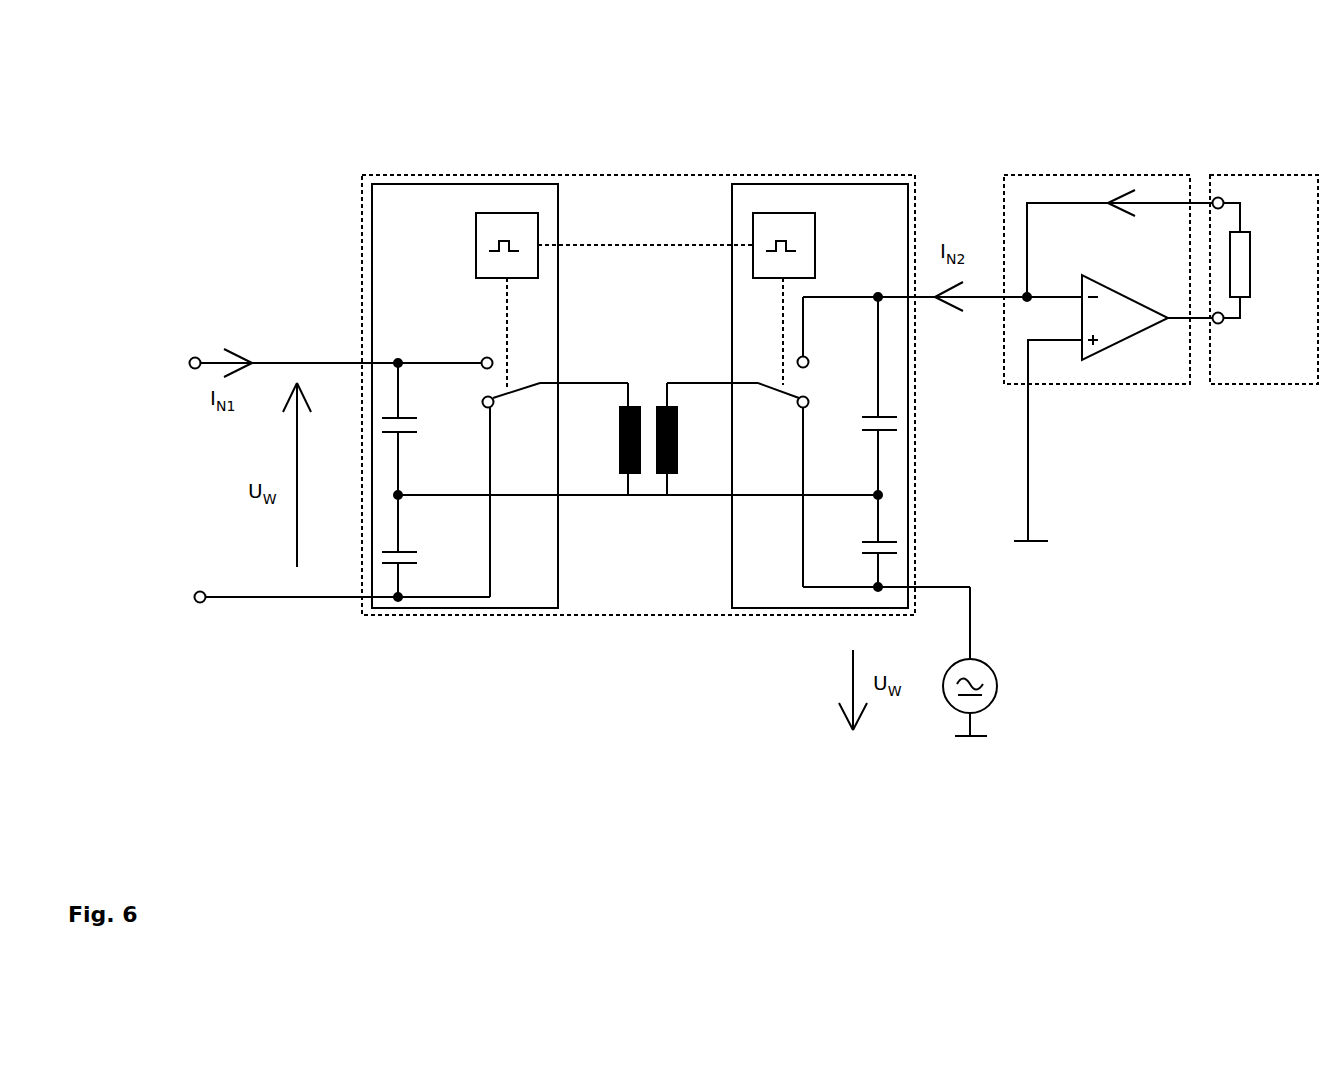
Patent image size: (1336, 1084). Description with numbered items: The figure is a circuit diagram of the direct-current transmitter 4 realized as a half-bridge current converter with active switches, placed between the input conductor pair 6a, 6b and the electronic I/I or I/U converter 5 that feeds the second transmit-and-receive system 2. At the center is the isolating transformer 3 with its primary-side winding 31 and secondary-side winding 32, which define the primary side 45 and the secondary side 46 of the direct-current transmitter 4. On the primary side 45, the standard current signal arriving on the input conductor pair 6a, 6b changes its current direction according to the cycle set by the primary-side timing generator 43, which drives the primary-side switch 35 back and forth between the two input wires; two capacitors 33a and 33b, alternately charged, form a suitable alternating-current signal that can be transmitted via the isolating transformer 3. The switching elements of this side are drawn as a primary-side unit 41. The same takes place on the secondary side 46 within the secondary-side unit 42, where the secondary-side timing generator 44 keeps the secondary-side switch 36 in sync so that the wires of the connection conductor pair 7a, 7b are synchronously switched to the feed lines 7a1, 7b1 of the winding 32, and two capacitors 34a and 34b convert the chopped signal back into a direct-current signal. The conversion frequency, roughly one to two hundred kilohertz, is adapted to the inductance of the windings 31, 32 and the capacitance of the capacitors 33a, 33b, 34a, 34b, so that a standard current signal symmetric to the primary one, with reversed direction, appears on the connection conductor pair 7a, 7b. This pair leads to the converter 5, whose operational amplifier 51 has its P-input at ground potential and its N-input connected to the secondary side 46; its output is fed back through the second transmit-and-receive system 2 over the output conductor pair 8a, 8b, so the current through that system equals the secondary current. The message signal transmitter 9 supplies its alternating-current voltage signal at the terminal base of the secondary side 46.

The second transmit-and-receive system 2 is at (1270, 176).
The isolating transformer 3 is at (639, 611).
The direct-current transmitter 4 is at (648, 152).
The electronic I/I or I/U converter 5 is at (1133, 454).
The input conductor 6a is at (337, 360).
The input conductor 6b is at (253, 598).
The connection conductor 7a is at (921, 295).
The connection conductor 7b is at (937, 603).
The feed line 7a1 is at (683, 383).
The feed line 7b1 is at (717, 495).
The output conductor 8a is at (1197, 200).
The output conductor 8b is at (1197, 327).
The message signal transmitter 9 is at (943, 693).
The primary-side winding 31 is at (620, 472).
The secondary-side winding 32 is at (677, 443).
The capacitor 33a is at (427, 423).
The capacitor 33b is at (427, 553).
The capacitor 34a is at (855, 423).
The capacitor 34b is at (855, 553).
The primary-side switch 35 is at (498, 378).
The secondary-side switch 36 is at (787, 372).
The primary-side switching unit 41 is at (423, 245).
The secondary-side switching unit 42 is at (863, 230).
The primary-side timing generator 43 is at (495, 213).
The secondary-side timing generator 44 is at (780, 213).
The primary side 45 is at (405, 587).
The secondary side 46 is at (950, 554).
The operational amplifier 51 is at (1110, 325).